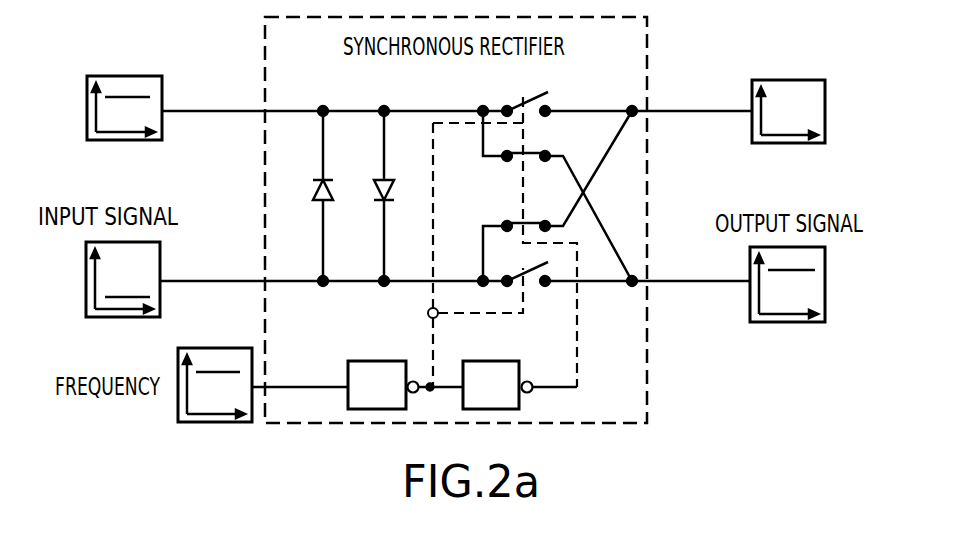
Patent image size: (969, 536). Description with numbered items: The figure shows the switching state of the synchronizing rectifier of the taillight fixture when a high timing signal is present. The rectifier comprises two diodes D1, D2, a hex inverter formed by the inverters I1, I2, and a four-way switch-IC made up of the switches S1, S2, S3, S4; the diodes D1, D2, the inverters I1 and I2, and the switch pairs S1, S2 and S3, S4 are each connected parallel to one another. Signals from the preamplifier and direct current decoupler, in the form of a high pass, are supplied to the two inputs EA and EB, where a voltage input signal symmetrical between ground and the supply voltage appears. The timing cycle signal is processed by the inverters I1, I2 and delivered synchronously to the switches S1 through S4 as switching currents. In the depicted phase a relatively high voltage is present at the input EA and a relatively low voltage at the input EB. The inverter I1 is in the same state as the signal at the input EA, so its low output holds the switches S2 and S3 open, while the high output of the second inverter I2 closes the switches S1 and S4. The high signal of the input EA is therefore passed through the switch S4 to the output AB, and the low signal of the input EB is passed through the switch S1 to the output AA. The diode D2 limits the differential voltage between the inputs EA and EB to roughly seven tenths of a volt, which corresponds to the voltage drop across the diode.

The input EA is at (172, 108).
The input EB is at (172, 279).
The output AA is at (726, 111).
The output AB is at (726, 284).
The diode D1 is at (311, 196).
The diode D2 is at (372, 196).
The switch S1 is at (539, 196).
The switch S2 is at (498, 271).
The switch S3 is at (498, 101).
The switch S4 is at (539, 196).
The inverter I1 is at (383, 385).
The inverter I2 is at (498, 385).